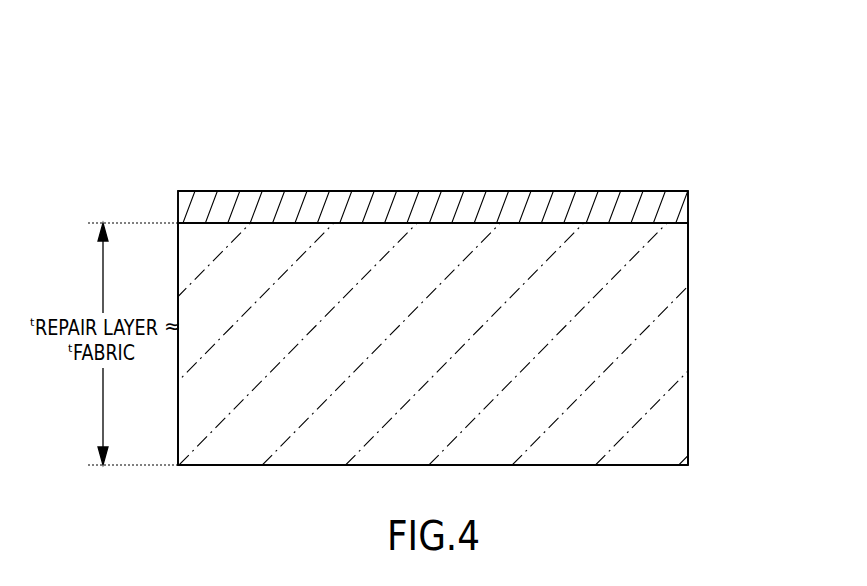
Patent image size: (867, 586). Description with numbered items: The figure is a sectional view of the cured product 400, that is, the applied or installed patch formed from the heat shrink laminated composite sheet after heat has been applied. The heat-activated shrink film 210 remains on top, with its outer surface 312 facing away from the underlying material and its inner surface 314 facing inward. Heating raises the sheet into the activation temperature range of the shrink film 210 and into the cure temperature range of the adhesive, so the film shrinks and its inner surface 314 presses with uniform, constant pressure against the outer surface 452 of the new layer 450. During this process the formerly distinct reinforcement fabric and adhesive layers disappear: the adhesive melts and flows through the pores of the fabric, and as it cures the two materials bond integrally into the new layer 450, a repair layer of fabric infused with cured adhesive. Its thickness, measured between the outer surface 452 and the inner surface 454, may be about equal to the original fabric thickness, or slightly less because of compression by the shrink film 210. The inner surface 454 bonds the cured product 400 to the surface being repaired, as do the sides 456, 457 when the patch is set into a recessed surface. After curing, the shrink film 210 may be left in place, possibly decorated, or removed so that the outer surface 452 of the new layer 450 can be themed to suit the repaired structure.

The cured product 400 is at (228, 72).
The heat-activated shrink film 210 is at (697, 205).
The outer surface 312 is at (633, 191).
The inner surface 314 is at (565, 224).
The new layer 450 is at (695, 333).
The outer surface 452 is at (664, 223).
The inner surface 454 is at (627, 465).
The side 456 is at (178, 452).
The side 457 is at (688, 400).